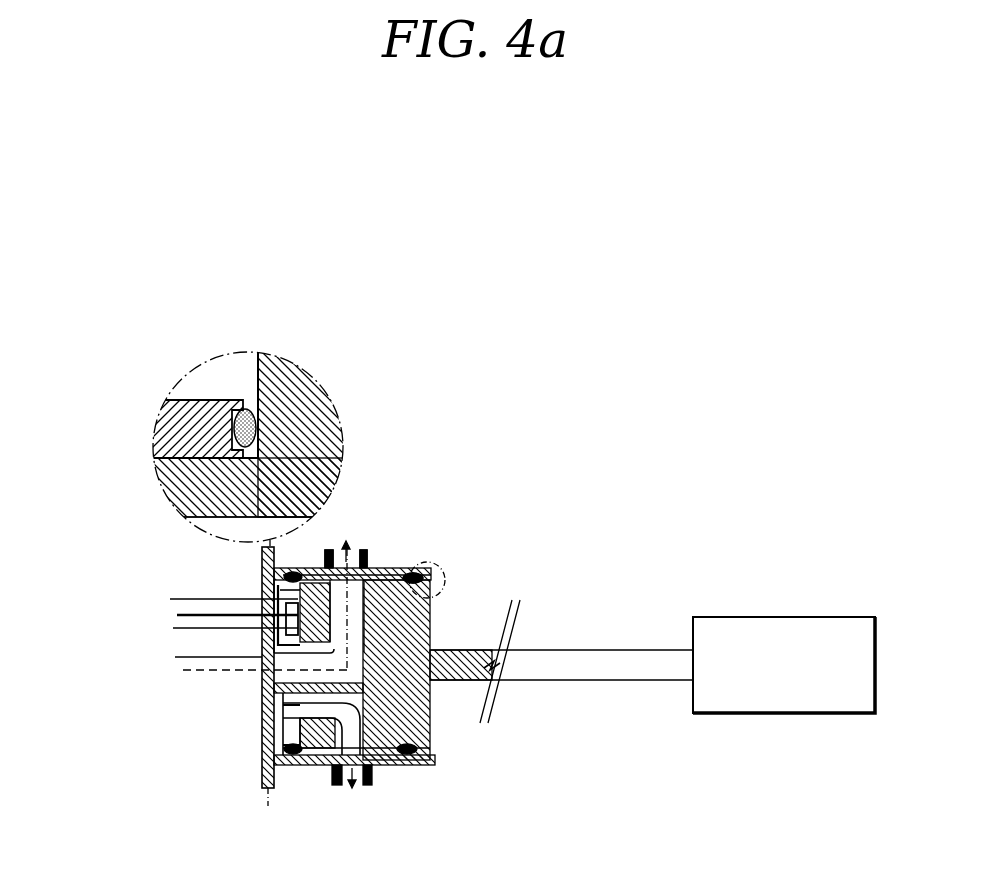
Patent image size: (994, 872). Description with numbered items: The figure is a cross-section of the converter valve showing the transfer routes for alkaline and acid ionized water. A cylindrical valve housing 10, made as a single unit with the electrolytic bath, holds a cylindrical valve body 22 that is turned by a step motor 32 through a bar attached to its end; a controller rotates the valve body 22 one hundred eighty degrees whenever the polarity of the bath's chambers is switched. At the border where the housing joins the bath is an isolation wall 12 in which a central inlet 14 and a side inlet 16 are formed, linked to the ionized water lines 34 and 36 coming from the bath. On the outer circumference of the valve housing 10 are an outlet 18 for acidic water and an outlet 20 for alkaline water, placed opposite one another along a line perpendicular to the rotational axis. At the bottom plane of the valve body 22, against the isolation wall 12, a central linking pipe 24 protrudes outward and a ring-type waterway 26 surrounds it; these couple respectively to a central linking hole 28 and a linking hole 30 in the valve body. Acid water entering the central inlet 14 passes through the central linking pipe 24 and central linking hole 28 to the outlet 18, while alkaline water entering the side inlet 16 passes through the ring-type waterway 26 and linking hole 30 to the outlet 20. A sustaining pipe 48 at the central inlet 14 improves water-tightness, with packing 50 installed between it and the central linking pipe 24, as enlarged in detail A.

The valve housing 10 is at (351, 545).
The isolation wall 12 is at (283, 725).
The central inlet 14 is at (262, 660).
The side inlet 16 is at (263, 595).
The outlet for acidic water 18 is at (367, 552).
The outlet for alkaline water 20 is at (340, 768).
The valve body 22 is at (316, 421).
The central linking pipe 24 is at (262, 685).
The ring-type waterway 26 is at (266, 787).
The central linking hole 28 is at (425, 585).
The linking hole 30 is at (432, 752).
The step motor 32 is at (740, 617).
The ionized water line 34 is at (193, 600).
The ionized water line 36 is at (178, 681).
The sustaining pipe 48 is at (175, 452).
The packing 50 is at (233, 426).
The detail A is at (440, 576).